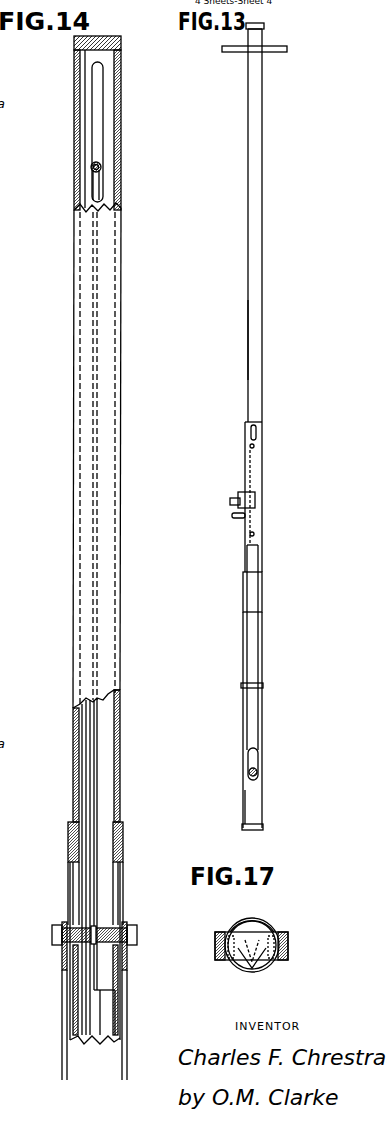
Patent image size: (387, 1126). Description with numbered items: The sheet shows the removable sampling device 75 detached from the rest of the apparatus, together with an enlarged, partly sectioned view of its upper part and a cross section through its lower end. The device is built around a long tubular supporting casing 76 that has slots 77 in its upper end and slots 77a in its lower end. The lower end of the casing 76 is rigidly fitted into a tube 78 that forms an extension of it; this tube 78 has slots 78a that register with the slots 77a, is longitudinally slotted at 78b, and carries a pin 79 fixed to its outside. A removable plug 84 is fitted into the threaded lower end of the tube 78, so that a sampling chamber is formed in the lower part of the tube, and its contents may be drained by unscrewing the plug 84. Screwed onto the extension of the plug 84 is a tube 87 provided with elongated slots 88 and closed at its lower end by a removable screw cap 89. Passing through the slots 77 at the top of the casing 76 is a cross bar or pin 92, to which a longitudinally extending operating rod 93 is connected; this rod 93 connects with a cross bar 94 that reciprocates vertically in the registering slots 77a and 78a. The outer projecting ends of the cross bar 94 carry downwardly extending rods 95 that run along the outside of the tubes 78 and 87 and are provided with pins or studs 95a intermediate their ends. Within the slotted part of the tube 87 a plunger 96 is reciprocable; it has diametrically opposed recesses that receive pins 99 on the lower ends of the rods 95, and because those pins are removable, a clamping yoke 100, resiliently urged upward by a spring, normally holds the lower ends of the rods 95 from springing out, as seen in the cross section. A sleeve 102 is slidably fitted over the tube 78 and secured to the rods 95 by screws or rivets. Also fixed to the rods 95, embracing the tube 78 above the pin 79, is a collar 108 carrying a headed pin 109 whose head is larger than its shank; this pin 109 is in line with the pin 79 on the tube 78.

In FIG. 13, the removable sampling device 75 is at (274, 343).
In FIG. 14, the tubular supporting casing 76 is at (121, 318).
In FIG. 13, the tubular supporting casing 76 is at (262, 283).
In FIG. 14, the slots 77 is at (97, 112).
In FIG. 13, the slots 77 is at (264, 41).
In FIG. 14, the slots 77a is at (70, 872).
In FIG. 14, the tube 78 is at (75, 1013).
In FIG. 13, the tube 78 is at (245, 460).
In FIG. 14, the slots 78a is at (73, 892).
In FIG. 13, the slots 78a is at (252, 432).
In FIG. 13, the longitudinal slots 78b is at (247, 563).
In FIG. 13, the pin 79 is at (232, 515).
In FIG. 13, the removable plug 84 is at (243, 685).
In FIG. 13, the tube 87 is at (243, 801).
In FIG. 17, the tube 87 is at (253, 918).
In FIG. 13, the elongated slots 88 is at (249, 773).
In FIG. 17, the elongated slots 88 is at (270, 928).
In FIG. 13, the removable screw cap 89 is at (242, 829).
In FIG. 14, the cross bar or pin 92 is at (101, 167).
In FIG. 13, the cross bar or pin 92 is at (237, 53).
In FIG. 14, the operating rod 93 is at (100, 198).
In FIG. 14, the cross bar 94 is at (78, 930).
In FIG. 13, the cross bar 94 is at (250, 446).
In FIG. 14, the rods 95 is at (122, 1066).
In FIG. 13, the rods 95 is at (250, 643).
In FIG. 17, the rods 95 is at (222, 932).
In FIG. 13, the pins or studs 95a is at (255, 534).
In FIG. 17, the plunger 96 is at (268, 966).
In FIG. 17, the pins 99 is at (249, 968).
In FIG. 13, the clamping yoke 100 is at (258, 766).
In FIG. 17, the clamping yoke 100 is at (215, 945).
In FIG. 13, the sleeve 102 is at (244, 600).
In FIG. 13, the collar 108 is at (250, 500).
In FIG. 13, the headed pin 109 is at (230, 500).